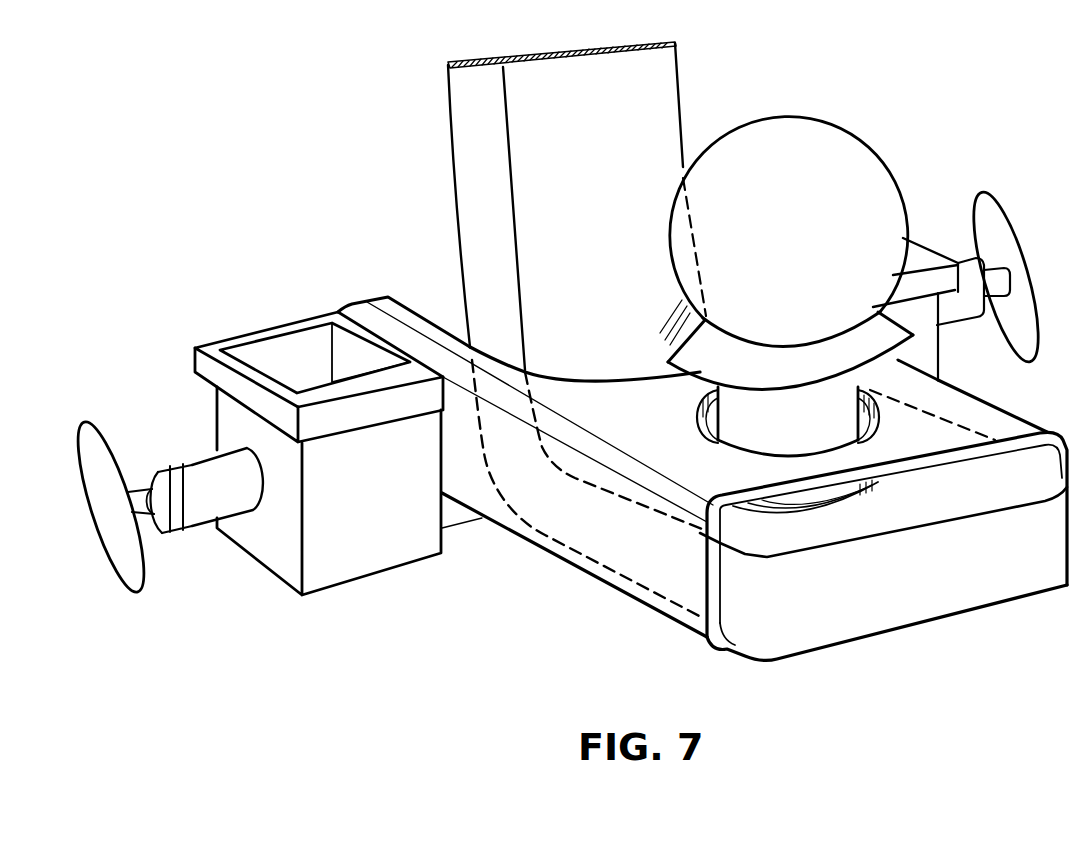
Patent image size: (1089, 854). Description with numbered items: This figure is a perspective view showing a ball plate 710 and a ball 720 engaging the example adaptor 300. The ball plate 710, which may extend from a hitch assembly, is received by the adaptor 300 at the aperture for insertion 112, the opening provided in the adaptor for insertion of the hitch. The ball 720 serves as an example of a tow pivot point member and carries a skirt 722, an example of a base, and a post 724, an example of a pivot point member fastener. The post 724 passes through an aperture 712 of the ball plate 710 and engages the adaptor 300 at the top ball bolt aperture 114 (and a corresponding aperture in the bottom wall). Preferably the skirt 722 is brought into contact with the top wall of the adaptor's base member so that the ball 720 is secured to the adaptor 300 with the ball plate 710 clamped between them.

The aperture for insertion of the hitch 112 is at (450, 310).
The top ball bolt aperture 114 is at (703, 440).
The adaptor 300 is at (445, 622).
The ball plate 710 is at (606, 194).
The aperture of the ball plate 712 is at (840, 501).
The ball 720 is at (803, 245).
The skirt 722 is at (806, 380).
The post 724 is at (808, 432).